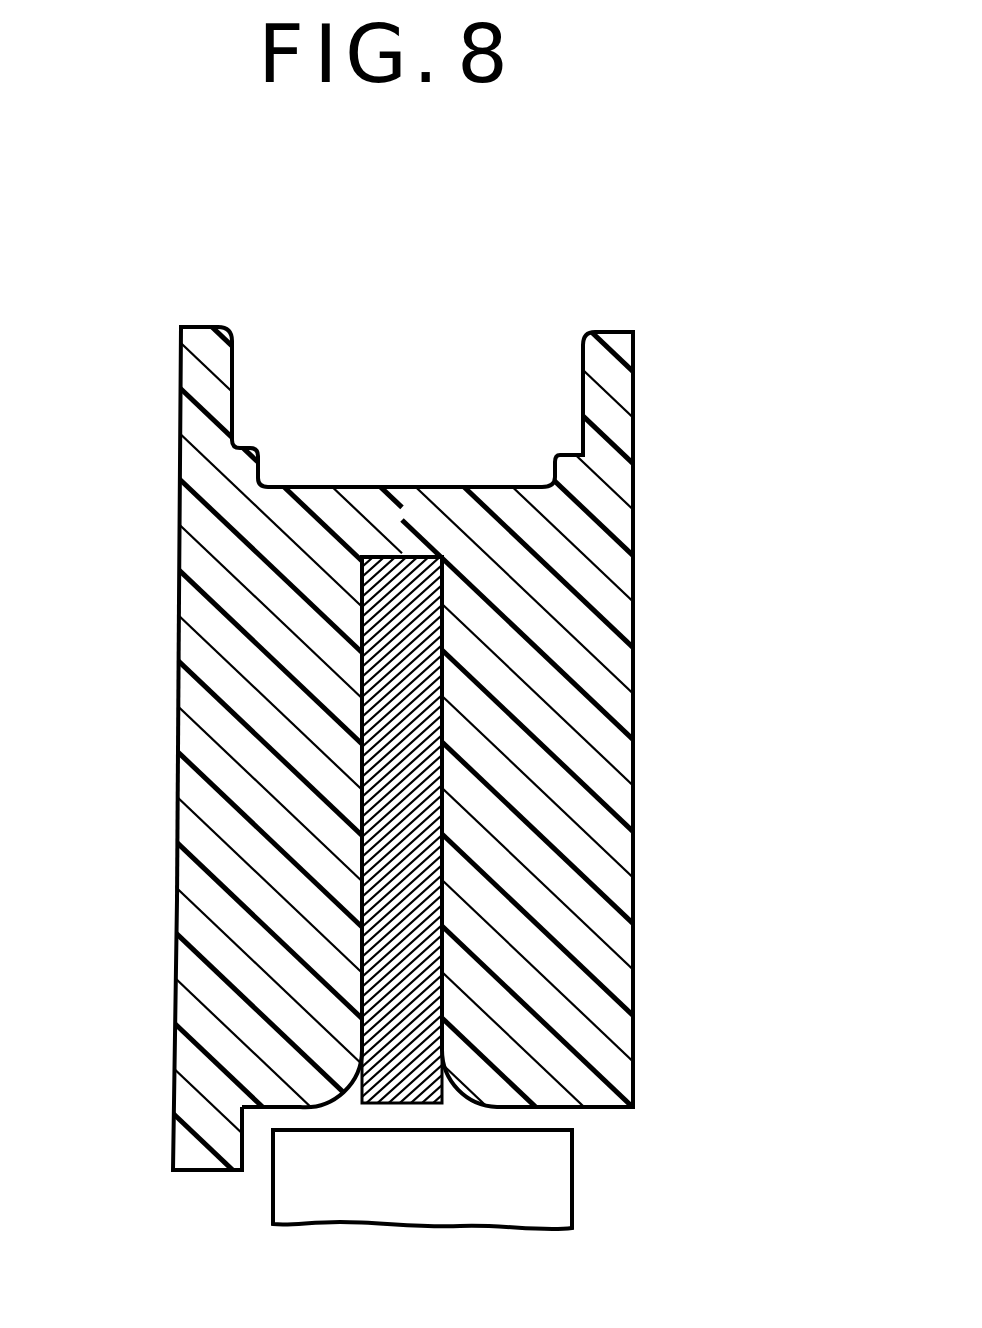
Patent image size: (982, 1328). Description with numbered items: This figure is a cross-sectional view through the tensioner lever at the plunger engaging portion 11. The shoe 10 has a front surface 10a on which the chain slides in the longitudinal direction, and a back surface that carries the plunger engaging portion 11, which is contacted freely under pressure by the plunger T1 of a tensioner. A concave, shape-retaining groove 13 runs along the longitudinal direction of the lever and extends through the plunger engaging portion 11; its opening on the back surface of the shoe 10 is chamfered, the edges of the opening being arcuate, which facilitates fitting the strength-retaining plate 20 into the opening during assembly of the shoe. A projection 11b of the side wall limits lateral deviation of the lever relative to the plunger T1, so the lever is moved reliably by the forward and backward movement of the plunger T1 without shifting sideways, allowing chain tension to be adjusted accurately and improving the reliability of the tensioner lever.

The shoe 10 is at (612, 500).
The front surface 10a is at (372, 487).
The plunger engaging portion 11 is at (287, 978).
The projection 11b is at (193, 1150).
The strength-retaining plate 20 is at (366, 680).
The shape-retaining groove 13 is at (440, 745).
The plunger T1 is at (572, 1188).